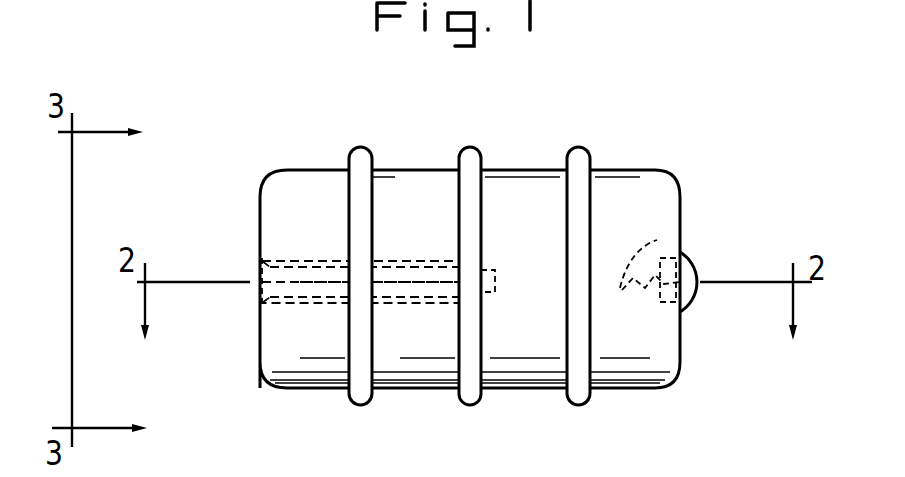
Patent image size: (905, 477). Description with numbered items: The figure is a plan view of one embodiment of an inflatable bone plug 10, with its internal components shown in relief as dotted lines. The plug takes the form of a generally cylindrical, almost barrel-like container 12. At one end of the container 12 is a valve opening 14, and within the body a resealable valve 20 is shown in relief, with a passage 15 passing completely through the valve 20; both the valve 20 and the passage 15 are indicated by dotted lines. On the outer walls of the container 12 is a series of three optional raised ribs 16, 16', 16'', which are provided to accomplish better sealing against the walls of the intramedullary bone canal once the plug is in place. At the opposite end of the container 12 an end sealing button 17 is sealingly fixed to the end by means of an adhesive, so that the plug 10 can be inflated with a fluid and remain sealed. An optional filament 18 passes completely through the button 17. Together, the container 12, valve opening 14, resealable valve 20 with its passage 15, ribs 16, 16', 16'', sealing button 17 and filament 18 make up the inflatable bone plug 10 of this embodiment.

The inflatable bone plug 10 is at (440, 148).
The container 12 is at (668, 170).
The valve opening 14 is at (238, 268).
The passage 15 is at (262, 300).
The raised rib 16 is at (334, 249).
The raised rib 16' is at (502, 305).
The raised rib 16'' is at (617, 306).
The end sealing button 17 is at (690, 297).
The filament 18 is at (657, 240).
The resealable valve 20 is at (324, 316).